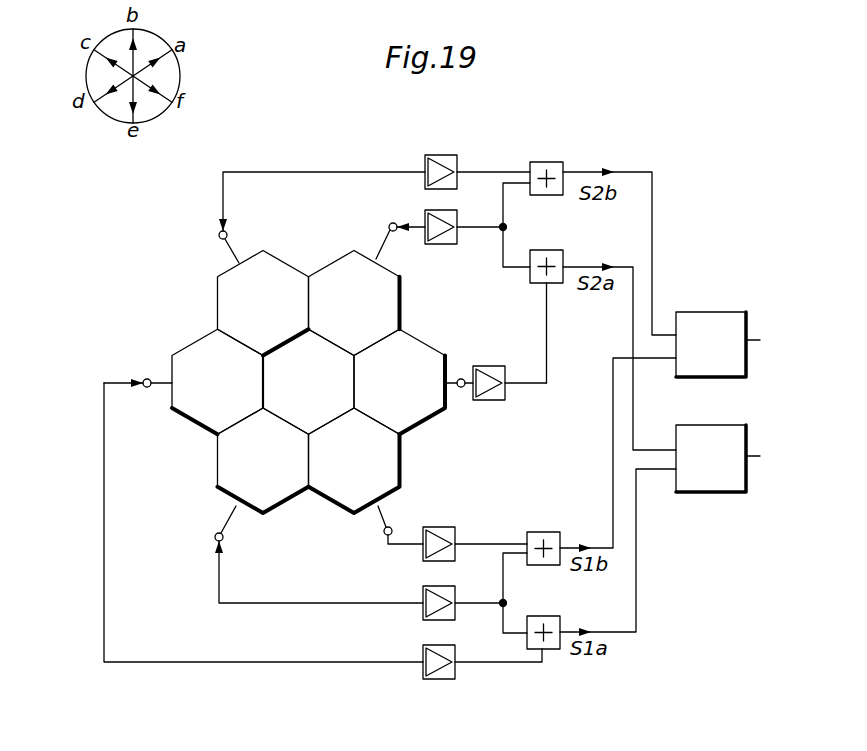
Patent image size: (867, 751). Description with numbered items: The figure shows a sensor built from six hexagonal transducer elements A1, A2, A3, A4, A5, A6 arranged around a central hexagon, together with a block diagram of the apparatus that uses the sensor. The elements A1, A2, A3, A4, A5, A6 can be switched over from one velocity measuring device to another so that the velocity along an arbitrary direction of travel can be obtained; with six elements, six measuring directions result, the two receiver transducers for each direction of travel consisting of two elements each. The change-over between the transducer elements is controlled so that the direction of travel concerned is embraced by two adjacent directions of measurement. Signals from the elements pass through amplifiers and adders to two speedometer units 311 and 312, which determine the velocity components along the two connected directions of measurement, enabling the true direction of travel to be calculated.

The speedometer unit 311 is at (702, 478).
The speedometer unit 312 is at (725, 322).
The transducer element A1 is at (263, 303).
The transducer element A2 is at (354, 303).
The transducer element A3 is at (399, 381).
The transducer element A4 is at (354, 460).
The transducer element A5 is at (263, 460).
The transducer element A6 is at (217, 381).